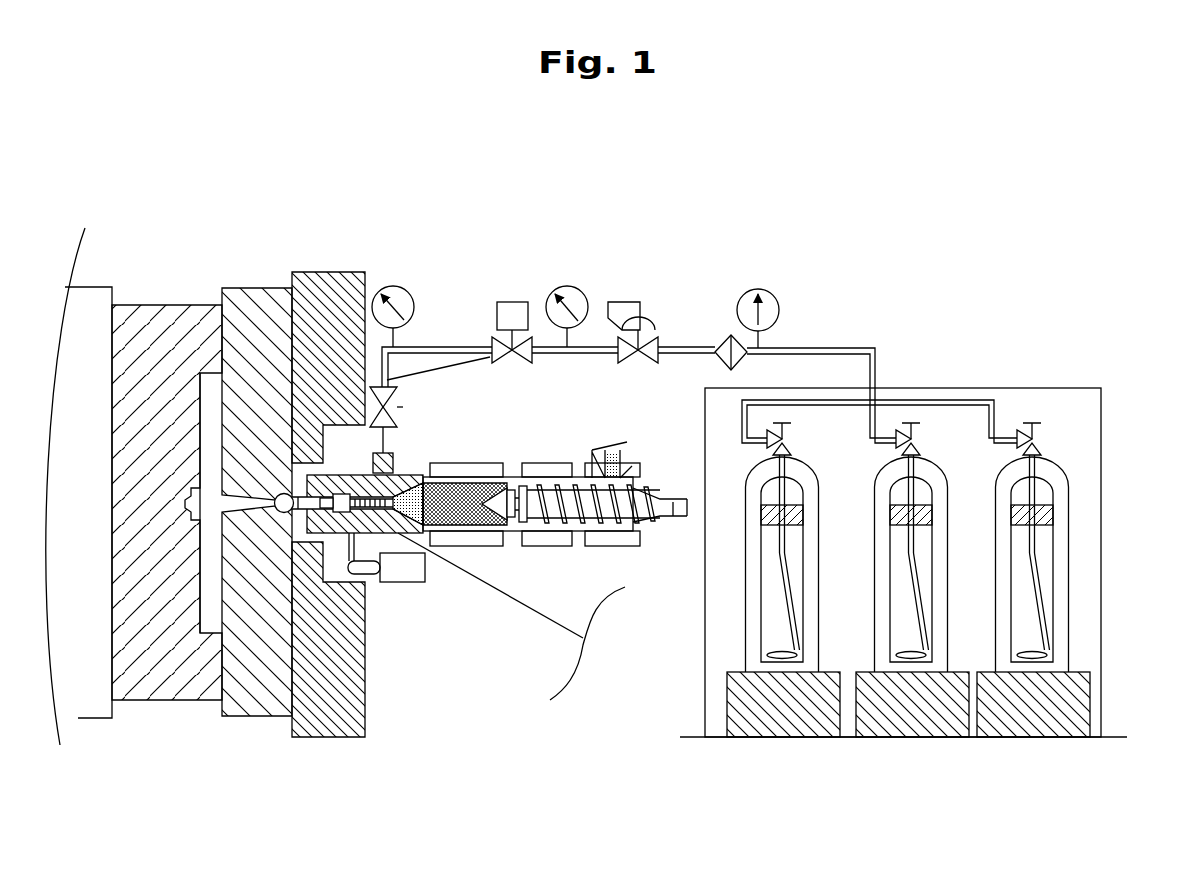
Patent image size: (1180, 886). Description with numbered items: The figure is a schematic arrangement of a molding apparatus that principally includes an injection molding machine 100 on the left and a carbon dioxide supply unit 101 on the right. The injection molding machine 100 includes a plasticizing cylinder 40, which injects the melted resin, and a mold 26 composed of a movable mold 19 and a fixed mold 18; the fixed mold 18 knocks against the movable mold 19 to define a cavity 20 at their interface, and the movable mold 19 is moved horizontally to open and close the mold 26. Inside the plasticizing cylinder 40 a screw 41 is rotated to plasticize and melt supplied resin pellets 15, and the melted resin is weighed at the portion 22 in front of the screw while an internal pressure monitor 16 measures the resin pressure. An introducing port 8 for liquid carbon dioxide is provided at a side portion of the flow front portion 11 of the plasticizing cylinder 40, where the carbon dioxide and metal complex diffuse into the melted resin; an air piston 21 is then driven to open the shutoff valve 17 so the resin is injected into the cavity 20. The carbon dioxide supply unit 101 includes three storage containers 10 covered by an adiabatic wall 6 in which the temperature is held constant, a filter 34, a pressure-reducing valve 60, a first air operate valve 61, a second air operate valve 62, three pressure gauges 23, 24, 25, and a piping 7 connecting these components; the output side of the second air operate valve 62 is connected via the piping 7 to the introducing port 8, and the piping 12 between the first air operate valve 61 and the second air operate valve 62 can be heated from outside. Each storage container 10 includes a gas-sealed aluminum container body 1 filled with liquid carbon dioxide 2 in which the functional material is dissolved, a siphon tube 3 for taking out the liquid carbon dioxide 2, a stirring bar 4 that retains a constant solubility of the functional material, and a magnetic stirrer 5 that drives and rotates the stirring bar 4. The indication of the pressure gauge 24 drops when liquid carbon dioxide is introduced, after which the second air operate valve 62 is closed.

The container body 1 is at (1060, 617).
The liquid carbon dioxide 2 is at (1027, 618).
The siphon tube 3 is at (1034, 547).
The stirring bar 4 is at (1024, 658).
The magnetic stirrer 5 is at (1026, 737).
The adiabatic wall 6 is at (1051, 388).
The piping 7 is at (849, 349).
The introducing port 8 is at (395, 487).
The storage container 10 is at (1068, 470).
The flow front portion 11 is at (410, 545).
The piping 12 is at (447, 372).
The pellets 15 is at (618, 482).
The internal pressure monitor 16 is at (370, 540).
The shutoff valve 17 is at (353, 545).
The fixed mold 18 is at (263, 305).
The movable mold 19 is at (145, 306).
The cavity 20 is at (207, 577).
The air piston 21 is at (408, 580).
The portion in front of the screw 22 is at (481, 473).
The pressure gauge 23 is at (580, 292).
The pressure gauge 24 is at (405, 290).
The pressure gauge 25 is at (771, 292).
The mold 26 is at (118, 227).
The filter 34 is at (728, 335).
The plasticizing cylinder 40 is at (477, 653).
The screw 41 is at (543, 477).
The pressure-reducing valve 60 is at (645, 302).
The first air operate valve 61 is at (512, 302).
The second air operate valve 62 is at (401, 430).
The injection molding machine 100 is at (105, 787).
The carbon dioxide supply unit 101 is at (1113, 225).